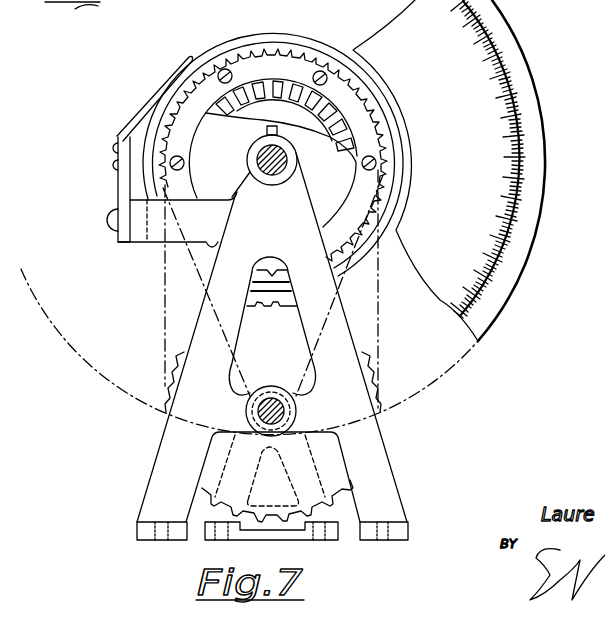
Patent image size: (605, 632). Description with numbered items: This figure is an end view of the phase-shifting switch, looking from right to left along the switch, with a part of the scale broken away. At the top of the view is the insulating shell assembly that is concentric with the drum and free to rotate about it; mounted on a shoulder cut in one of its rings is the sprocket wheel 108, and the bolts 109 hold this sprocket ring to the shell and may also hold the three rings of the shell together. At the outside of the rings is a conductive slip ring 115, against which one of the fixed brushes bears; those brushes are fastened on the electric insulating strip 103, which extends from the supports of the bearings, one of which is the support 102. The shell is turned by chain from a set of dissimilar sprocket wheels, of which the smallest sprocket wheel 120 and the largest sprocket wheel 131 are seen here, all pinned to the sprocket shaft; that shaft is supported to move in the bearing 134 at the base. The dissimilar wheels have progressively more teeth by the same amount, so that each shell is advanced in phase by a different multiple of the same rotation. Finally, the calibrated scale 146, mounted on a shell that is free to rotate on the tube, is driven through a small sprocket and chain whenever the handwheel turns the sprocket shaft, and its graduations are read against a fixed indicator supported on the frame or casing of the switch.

The bearing support 102 is at (151, 477).
The electric insulating strip 103 is at (116, 186).
The sprocket wheel 108 is at (280, 50).
The bolts 109 is at (229, 69).
The conductive slip ring 115 is at (528, 159).
The sprocket wheel 120 is at (279, 392).
The sprocket wheel 131 is at (163, 398).
The bearing 134 is at (333, 541).
The scale 146 is at (546, 205).